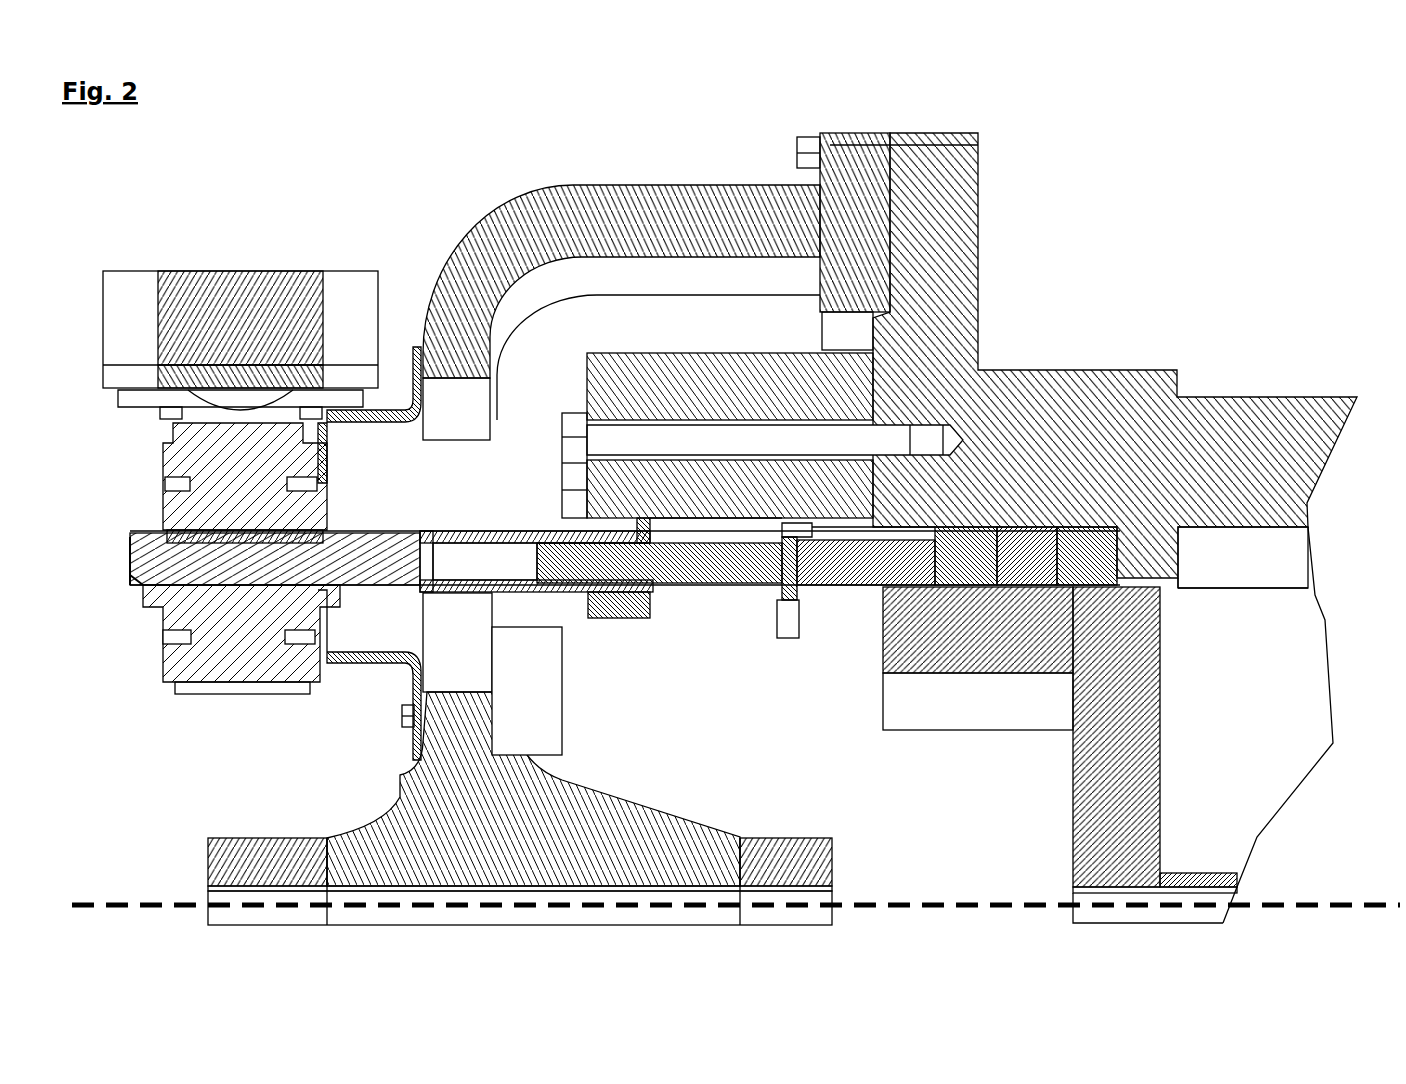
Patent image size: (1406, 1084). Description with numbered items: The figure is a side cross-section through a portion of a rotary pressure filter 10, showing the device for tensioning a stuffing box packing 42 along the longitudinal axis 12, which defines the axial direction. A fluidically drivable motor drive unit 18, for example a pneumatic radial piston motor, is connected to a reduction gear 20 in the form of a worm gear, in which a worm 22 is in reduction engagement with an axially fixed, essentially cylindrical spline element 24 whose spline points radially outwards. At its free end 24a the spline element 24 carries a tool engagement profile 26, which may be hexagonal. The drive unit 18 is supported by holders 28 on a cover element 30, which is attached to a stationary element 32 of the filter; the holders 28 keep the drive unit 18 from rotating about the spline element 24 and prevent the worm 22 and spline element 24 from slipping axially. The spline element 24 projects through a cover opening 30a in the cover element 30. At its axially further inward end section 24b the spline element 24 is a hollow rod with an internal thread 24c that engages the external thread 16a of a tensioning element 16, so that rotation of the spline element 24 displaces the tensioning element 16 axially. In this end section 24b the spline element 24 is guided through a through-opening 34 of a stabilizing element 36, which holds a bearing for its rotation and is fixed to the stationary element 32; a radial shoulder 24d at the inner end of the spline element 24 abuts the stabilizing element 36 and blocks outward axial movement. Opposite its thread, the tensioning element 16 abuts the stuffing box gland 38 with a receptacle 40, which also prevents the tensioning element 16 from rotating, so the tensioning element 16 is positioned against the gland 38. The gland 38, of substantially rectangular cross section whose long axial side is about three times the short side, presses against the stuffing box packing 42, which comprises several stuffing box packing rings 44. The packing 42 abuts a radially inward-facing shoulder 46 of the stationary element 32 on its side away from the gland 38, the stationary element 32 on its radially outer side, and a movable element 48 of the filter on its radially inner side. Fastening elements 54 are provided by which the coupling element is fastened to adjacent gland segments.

The rotary pressure filter 10 is at (1262, 214).
The longitudinal axis 12 is at (135, 893).
The tensioning element 16 is at (660, 570).
The external thread 16a is at (737, 588).
The motor drive unit 18 is at (205, 305).
The reduction gear 20 is at (315, 535).
The worm 22 is at (195, 535).
The spline element 24 is at (357, 560).
The free end 24a is at (135, 575).
The axially further inward end section 24b is at (617, 588).
The internal thread 24c is at (528, 578).
The radial shoulder 24d is at (650, 600).
The tool engagement profile 26 is at (128, 560).
The holder 28 is at (386, 405).
The cover element 30 is at (752, 205).
The cover opening 30a is at (648, 394).
The stationary element 32 is at (952, 323).
The through-opening 34 is at (590, 590).
The stabilizing element 36 is at (620, 405).
The stuffing box gland 38 is at (878, 578).
The receptacle 40 is at (788, 582).
The stuffing box packing 42 is at (955, 545).
The stuffing box packing rings 44 is at (970, 558).
The radially inward-facing shoulder 46 is at (1153, 542).
The movable element 48 is at (1132, 834).
The fastening element 54 is at (790, 632).